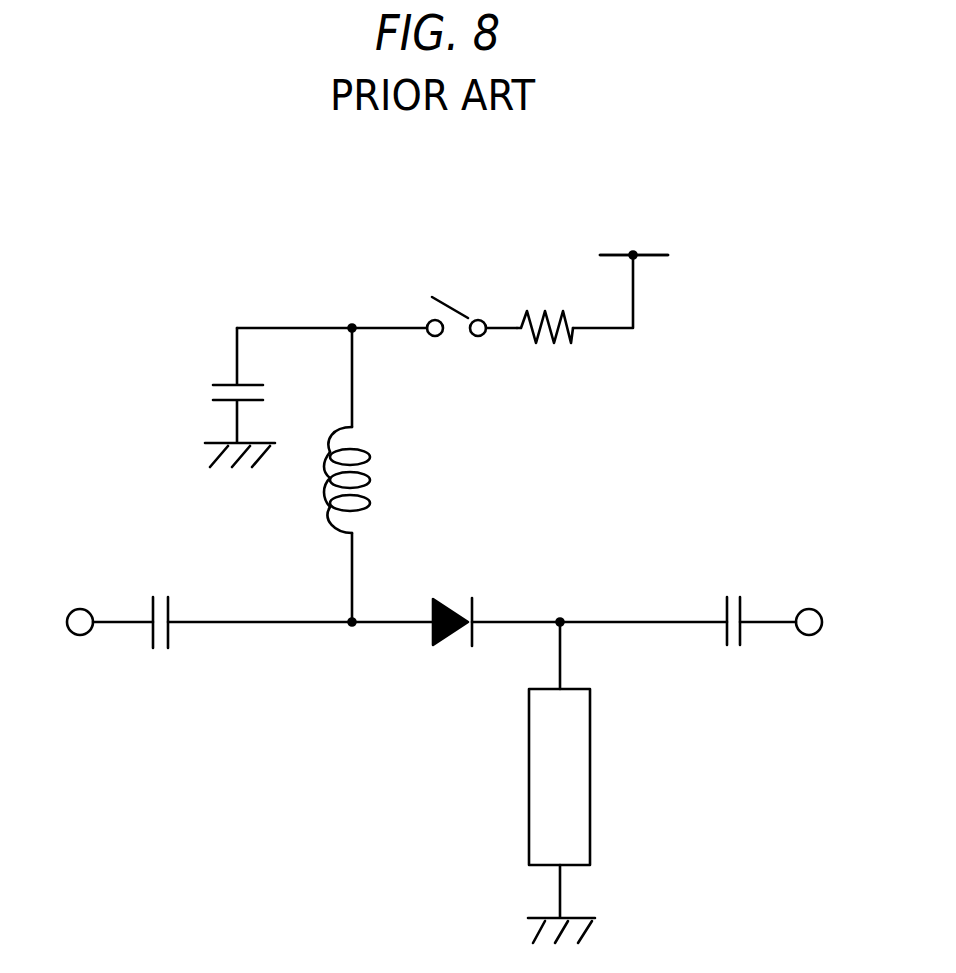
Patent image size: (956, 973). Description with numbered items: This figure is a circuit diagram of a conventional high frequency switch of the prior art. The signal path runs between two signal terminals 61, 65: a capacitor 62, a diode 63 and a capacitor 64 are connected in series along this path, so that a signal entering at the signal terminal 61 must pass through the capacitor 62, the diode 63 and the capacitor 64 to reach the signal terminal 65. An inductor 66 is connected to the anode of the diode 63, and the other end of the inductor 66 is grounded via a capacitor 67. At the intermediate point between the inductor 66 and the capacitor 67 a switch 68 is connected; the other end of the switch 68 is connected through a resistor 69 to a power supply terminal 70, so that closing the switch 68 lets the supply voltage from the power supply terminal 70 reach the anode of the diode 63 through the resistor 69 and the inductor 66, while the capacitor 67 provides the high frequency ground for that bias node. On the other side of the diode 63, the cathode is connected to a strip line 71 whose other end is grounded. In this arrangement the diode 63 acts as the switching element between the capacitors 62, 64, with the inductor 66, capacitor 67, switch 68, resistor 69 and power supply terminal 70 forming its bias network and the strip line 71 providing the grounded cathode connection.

The signal terminal 61 is at (78, 609).
The capacitor 62 is at (160, 651).
The diode 63 is at (447, 605).
The capacitor 64 is at (734, 648).
The signal terminal 65 is at (818, 609).
The inductor 66 is at (368, 477).
The capacitor 67 is at (220, 392).
The switch 68 is at (447, 292).
The resistor 69 is at (546, 308).
The power supply terminal 70 is at (650, 250).
The strip line 71 is at (590, 768).